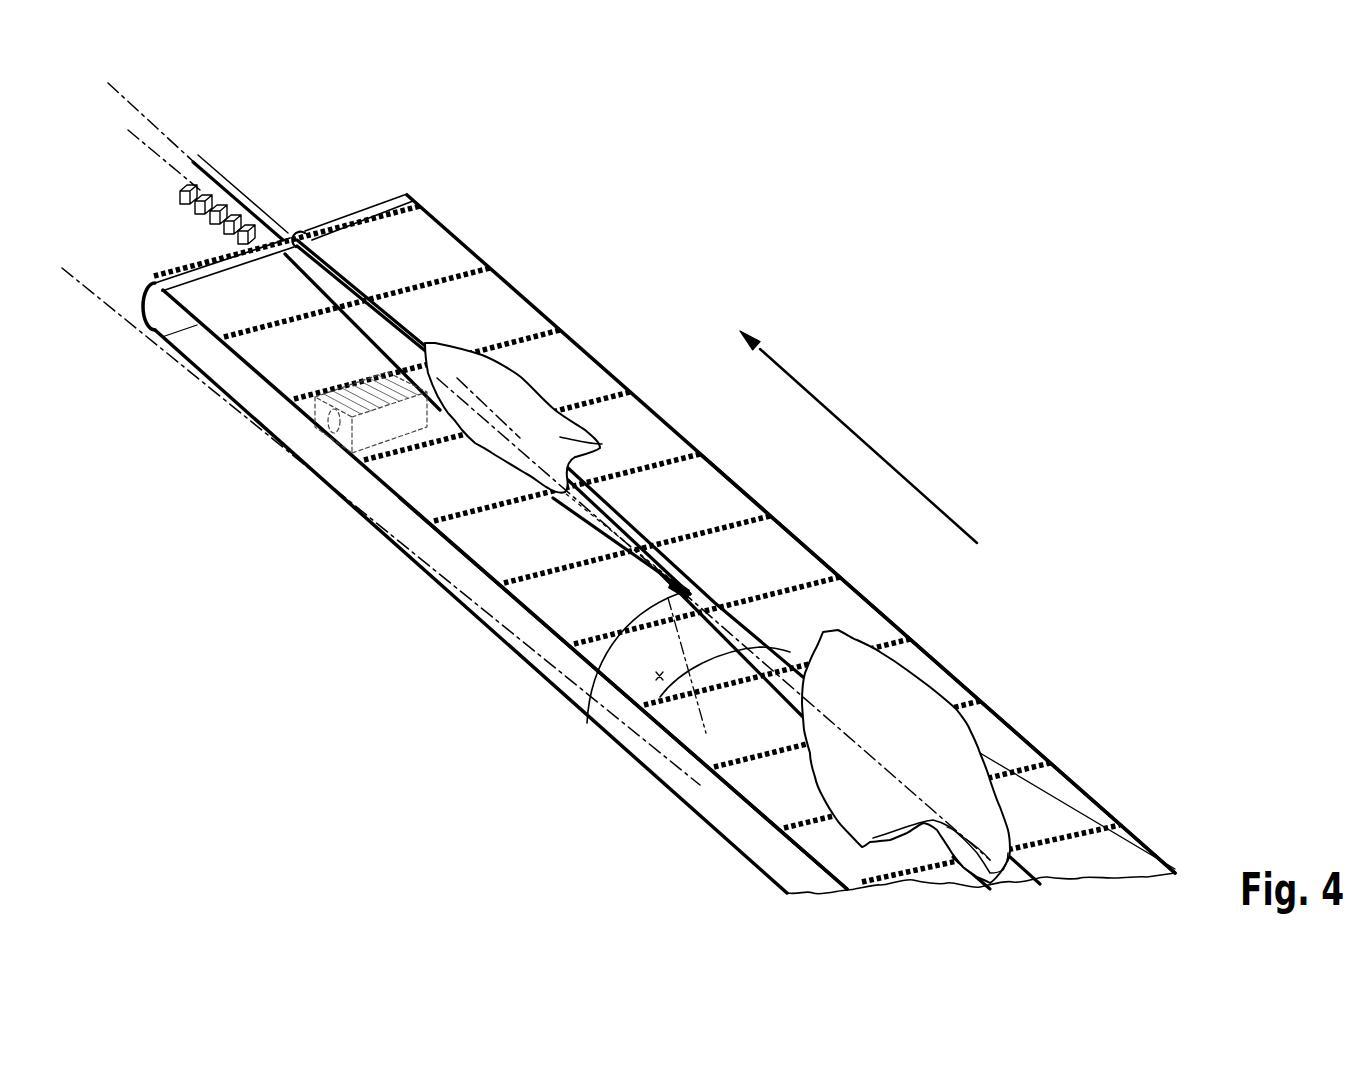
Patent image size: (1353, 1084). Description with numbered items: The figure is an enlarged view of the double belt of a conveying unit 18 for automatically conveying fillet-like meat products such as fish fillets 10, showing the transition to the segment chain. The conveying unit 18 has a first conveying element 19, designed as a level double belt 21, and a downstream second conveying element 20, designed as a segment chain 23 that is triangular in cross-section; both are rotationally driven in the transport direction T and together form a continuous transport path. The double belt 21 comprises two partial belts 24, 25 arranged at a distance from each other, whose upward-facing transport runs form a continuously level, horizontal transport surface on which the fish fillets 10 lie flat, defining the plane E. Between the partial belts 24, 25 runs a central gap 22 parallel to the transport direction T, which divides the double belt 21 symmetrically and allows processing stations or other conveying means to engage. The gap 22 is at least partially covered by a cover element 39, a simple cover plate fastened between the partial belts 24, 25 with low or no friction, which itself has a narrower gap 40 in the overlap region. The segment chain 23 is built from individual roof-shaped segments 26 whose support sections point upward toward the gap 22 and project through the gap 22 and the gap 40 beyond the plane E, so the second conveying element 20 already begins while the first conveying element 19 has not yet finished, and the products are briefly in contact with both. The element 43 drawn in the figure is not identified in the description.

The fish fillets 10 is at (560, 437).
The conveying unit 18 is at (668, 145).
The first conveying element 19 is at (596, 313).
The second conveying element 20 is at (112, 276).
The double belt 21 is at (817, 550).
The gap 22 is at (310, 243).
The segment chain 23 is at (255, 160).
The partial belt 24 is at (543, 608).
The partial belt 25 is at (752, 512).
The segment 26 is at (239, 244).
The cover element 39 is at (614, 728).
The gap 40 is at (643, 603).
The drive unit 43 is at (395, 402).
The plane E is at (513, 561).
The transport direction T is at (815, 400).